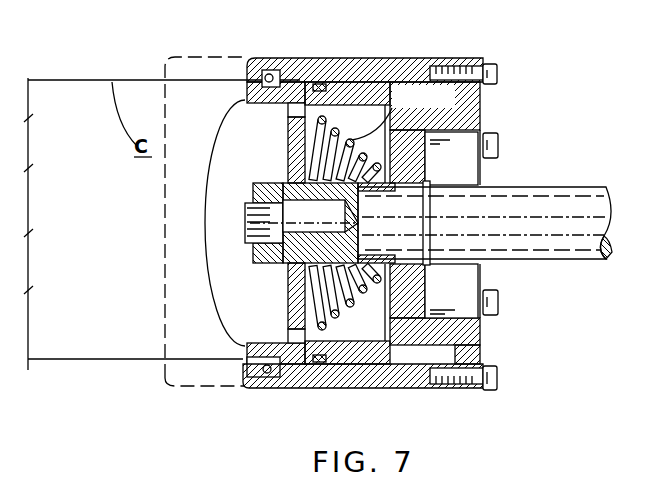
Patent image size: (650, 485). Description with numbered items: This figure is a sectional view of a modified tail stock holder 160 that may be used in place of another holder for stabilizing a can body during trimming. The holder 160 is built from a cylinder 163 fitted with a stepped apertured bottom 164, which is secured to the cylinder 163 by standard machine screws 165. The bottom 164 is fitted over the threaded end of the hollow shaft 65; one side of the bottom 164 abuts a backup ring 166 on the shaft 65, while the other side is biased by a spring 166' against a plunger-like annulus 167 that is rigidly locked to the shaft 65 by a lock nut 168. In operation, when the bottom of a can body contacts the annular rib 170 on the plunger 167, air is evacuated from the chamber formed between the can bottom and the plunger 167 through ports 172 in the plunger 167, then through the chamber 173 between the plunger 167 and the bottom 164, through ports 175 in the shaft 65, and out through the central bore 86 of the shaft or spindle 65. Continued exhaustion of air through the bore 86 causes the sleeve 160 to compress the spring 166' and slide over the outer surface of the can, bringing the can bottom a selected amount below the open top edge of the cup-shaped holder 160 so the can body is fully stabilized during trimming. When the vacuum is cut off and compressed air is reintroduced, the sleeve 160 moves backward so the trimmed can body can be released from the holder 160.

The modified tail stock holder 160 is at (347, 58).
The cylinder 163 is at (373, 377).
The stepped apertured bottom 164 is at (478, 333).
The machine screws 165 is at (495, 385).
The backup ring 166 is at (449, 225).
The spring 166' is at (431, 132).
The plunger-like annulus 167 is at (295, 342).
The lock nut 168 is at (250, 247).
The annular rib 170 is at (264, 70).
The ports 172 is at (297, 100).
The chamber 173 is at (353, 330).
The ports 175 is at (362, 213).
The hollow shaft 65 is at (525, 202).
The central bore 86 is at (542, 227).